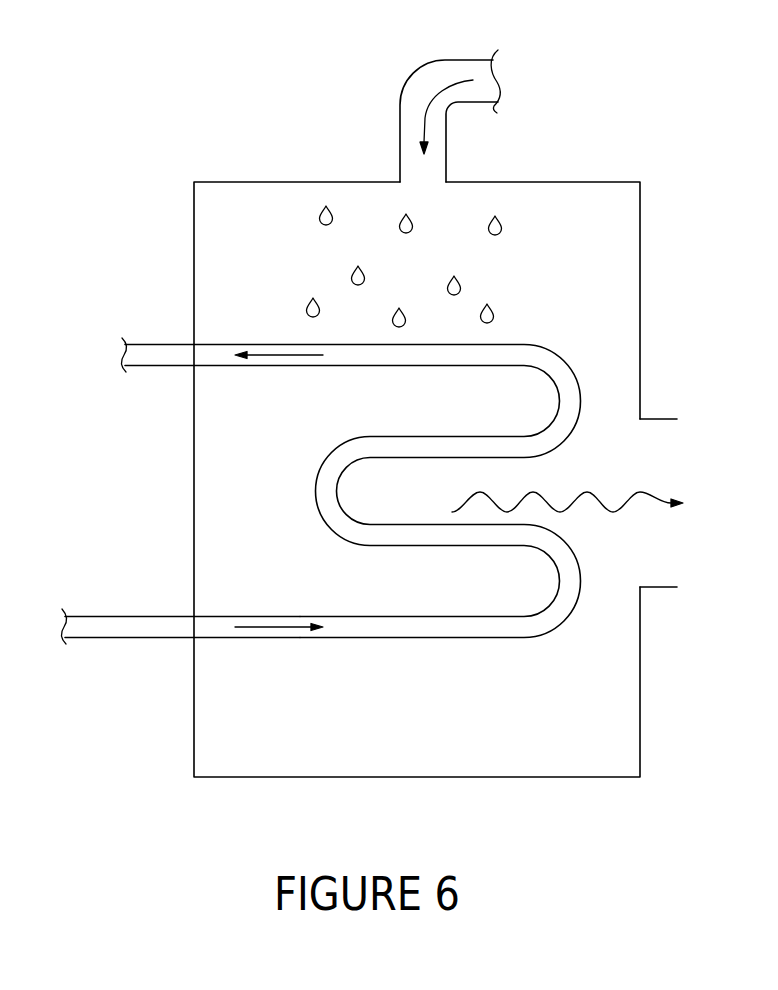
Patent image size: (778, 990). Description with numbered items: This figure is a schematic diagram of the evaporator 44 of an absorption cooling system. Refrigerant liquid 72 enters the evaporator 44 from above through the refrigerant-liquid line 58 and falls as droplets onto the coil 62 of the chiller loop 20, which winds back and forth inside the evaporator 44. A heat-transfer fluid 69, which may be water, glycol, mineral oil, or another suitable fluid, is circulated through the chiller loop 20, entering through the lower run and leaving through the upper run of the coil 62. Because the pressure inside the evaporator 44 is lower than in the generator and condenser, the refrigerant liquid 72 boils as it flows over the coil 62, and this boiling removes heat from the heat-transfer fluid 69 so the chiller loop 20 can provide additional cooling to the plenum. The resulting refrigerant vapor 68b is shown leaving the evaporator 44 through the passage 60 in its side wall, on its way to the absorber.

The chiller loop 20 is at (150, 639).
The evaporator 44 is at (553, 182).
The refrigerant-liquid line 58 is at (458, 58).
The passage 60 is at (660, 418).
The coil 62 is at (576, 371).
The refrigerant vapor 68b is at (588, 494).
The heat-transfer fluid 69 is at (283, 358).
The refrigerant liquid 72 is at (427, 112).